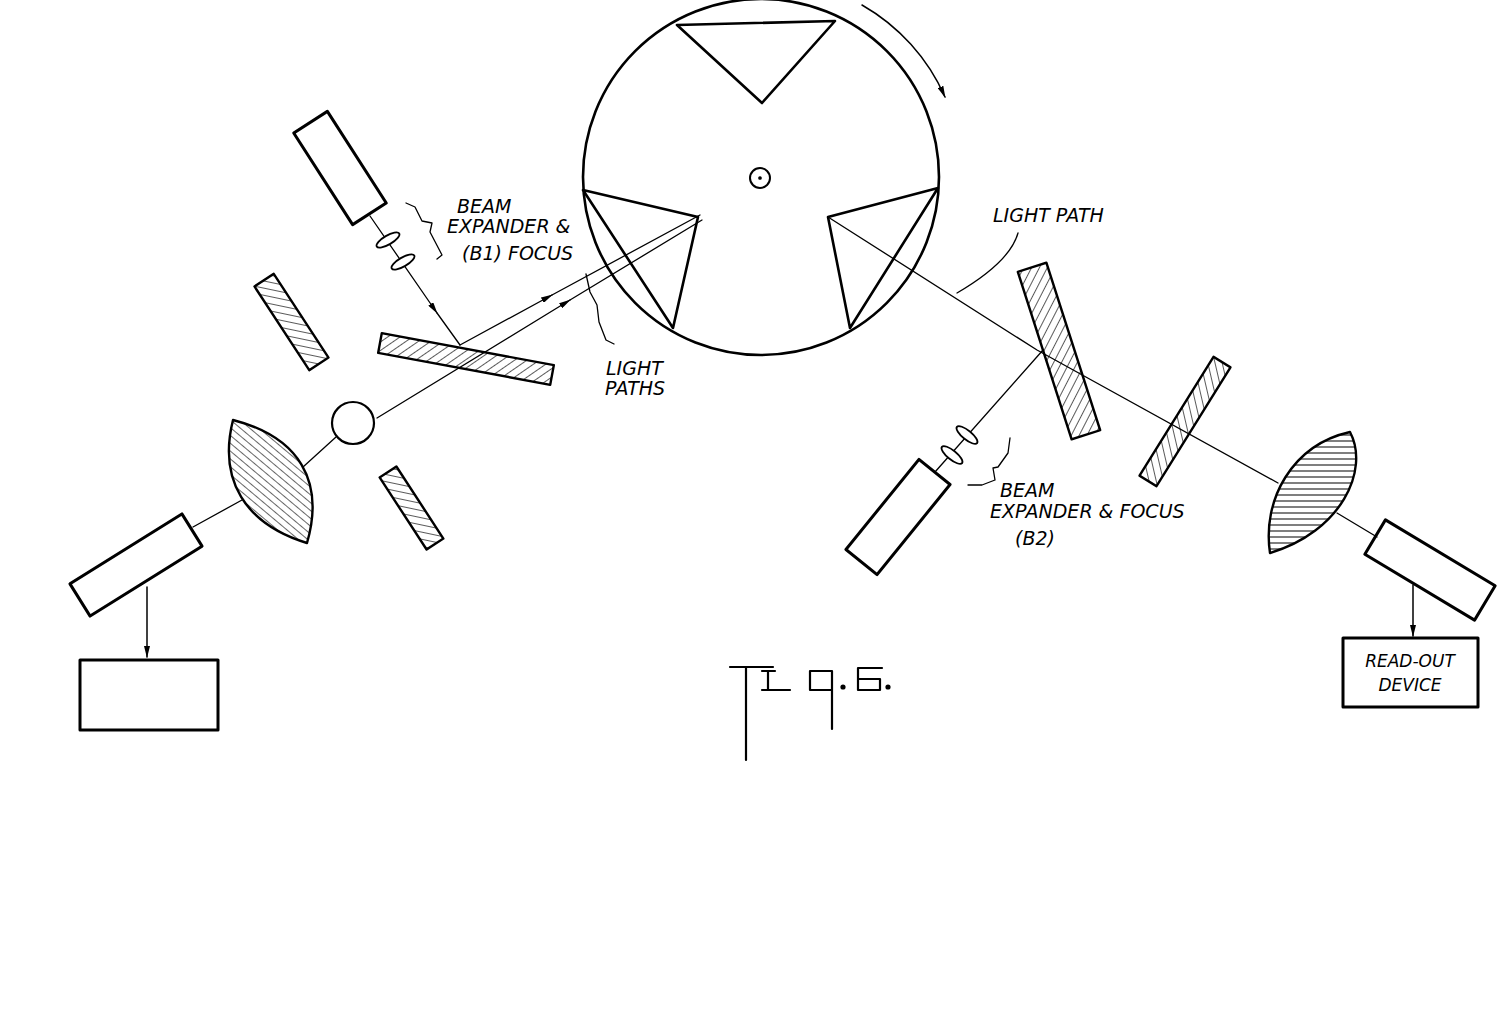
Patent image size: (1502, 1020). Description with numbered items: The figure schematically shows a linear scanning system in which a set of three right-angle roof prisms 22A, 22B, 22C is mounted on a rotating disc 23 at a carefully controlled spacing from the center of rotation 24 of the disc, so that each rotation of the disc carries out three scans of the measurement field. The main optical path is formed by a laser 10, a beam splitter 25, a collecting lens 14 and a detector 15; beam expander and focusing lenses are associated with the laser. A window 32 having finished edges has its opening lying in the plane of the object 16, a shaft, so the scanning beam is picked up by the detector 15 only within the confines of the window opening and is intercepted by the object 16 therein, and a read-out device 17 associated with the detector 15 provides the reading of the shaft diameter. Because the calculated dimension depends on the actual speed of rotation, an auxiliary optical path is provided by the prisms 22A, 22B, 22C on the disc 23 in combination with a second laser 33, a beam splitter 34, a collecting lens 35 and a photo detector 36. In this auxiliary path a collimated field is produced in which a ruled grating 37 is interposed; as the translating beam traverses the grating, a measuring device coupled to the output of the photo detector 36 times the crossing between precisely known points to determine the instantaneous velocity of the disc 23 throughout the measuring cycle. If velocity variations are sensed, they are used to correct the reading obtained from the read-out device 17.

The laser 10 is at (333, 124).
The collecting lens 14 is at (313, 532).
The detector 15 is at (182, 513).
The object (shaft) 16 is at (375, 434).
The read-out device 17 is at (218, 664).
The right-angle roof prism 22A is at (870, 205).
The right-angle roof prism 22B is at (792, 73).
The right-angle roof prism 22C is at (655, 200).
The rotating disc 23 is at (939, 140).
The disc axis 24 is at (760, 188).
The beam splitter 25 is at (552, 385).
The window 32 is at (437, 517).
The laser 33 is at (897, 560).
The beam splitter 34 is at (1065, 302).
The collecting lens 35 is at (1352, 453).
The photo detector 36 is at (1427, 542).
The ruled grating 37 is at (1228, 363).